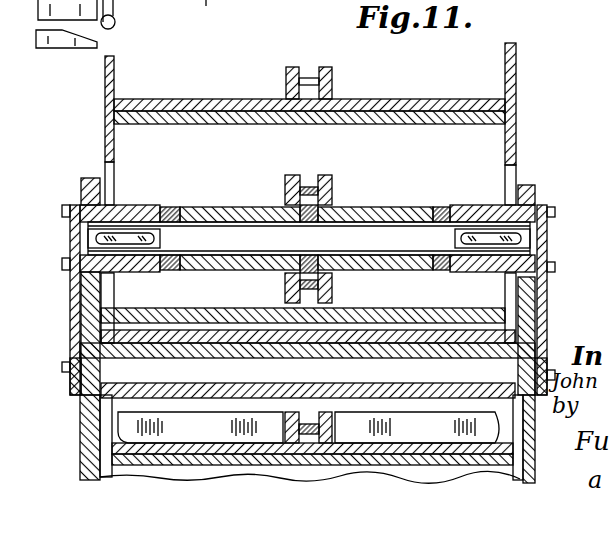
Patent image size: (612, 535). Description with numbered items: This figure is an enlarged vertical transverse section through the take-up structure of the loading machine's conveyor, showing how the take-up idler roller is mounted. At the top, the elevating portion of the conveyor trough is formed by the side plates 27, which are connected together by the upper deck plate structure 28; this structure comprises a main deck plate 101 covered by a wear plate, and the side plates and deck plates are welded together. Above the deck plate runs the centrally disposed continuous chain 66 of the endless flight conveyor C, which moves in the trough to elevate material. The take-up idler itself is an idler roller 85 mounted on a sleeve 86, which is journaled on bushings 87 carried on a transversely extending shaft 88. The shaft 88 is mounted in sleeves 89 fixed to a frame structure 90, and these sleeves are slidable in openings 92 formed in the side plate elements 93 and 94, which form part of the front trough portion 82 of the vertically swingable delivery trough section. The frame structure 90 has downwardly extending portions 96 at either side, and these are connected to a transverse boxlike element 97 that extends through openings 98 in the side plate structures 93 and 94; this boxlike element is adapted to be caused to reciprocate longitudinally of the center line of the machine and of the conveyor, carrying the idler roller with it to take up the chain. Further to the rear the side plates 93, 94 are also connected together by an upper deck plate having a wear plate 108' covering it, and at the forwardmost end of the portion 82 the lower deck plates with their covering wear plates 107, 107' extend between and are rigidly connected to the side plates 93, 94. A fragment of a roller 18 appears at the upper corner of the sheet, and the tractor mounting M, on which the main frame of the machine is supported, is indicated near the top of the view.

The roller 18 is at (124, 0).
The tractor mounting M is at (204, 16).
The side plates 27 is at (105, 98).
The upper deck plate structure 28 is at (447, 93).
The main deck plate 101 is at (193, 98).
The chain 66 is at (286, 70).
The flight conveyor C is at (333, 68).
The idler roller 85 is at (312, 208).
The sleeve 86 is at (190, 207).
The bushings 87 is at (238, 207).
The shaft 88 is at (278, 237).
The sleeves 89 is at (140, 205).
The frame structure 90 is at (75, 205).
The openings 92 is at (87, 178).
The downwardly extending portions 96 is at (74, 290).
The front trough portion 82 is at (88, 307).
The wear plate 108' is at (303, 302).
The openings 98 is at (80, 352).
The boxlike element 97 is at (320, 392).
The side plate element 93 is at (85, 413).
The side plate element 94 is at (100, 450).
The lower deck plates 107 is at (200, 434).
The wear plates 107' is at (417, 434).